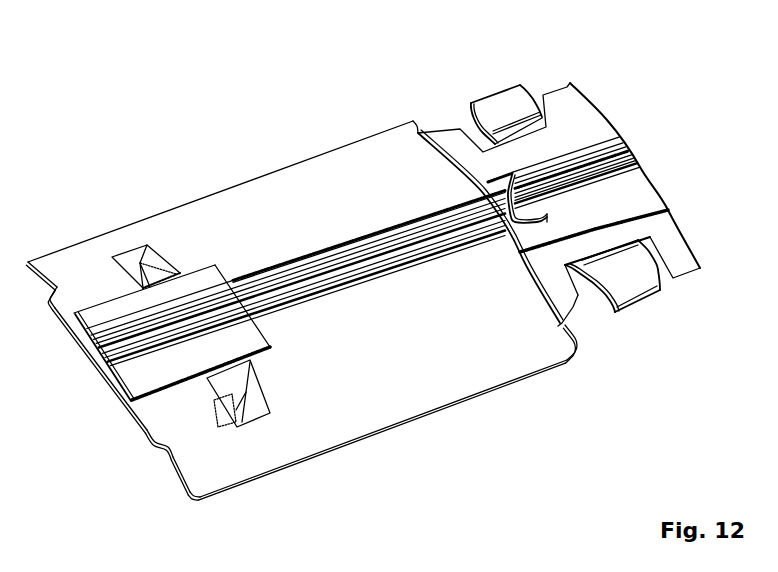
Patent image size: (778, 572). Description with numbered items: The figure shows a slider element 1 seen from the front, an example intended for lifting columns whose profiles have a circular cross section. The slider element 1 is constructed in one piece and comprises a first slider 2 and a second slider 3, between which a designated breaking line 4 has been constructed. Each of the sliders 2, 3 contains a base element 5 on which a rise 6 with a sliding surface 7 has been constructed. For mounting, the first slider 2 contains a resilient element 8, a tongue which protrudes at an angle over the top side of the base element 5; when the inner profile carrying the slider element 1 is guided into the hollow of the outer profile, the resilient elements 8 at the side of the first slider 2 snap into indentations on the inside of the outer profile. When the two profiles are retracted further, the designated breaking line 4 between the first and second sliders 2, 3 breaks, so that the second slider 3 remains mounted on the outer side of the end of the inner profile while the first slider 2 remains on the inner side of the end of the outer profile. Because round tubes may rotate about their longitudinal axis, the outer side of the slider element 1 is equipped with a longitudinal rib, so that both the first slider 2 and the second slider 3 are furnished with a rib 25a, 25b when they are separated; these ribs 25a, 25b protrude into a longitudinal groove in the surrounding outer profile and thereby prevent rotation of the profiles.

The slider element 1 is at (273, 160).
The first slider 2 is at (572, 77).
The second slider 3 is at (388, 447).
The designated breaking line 4 is at (572, 324).
The base element 5 is at (445, 385).
The rise 6 is at (167, 393).
The sliding surface 7 is at (145, 373).
The resilient element 8 is at (502, 102).
The rib 25a is at (596, 163).
The rib 25b is at (260, 290).